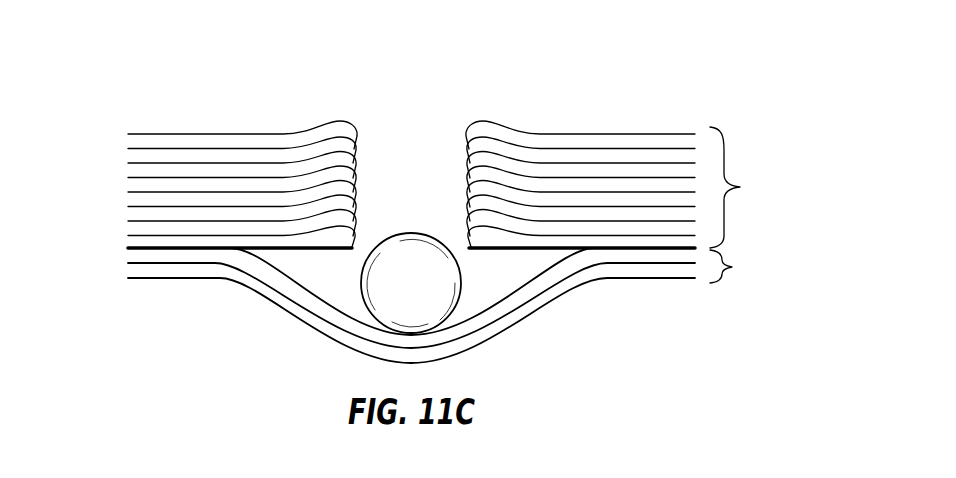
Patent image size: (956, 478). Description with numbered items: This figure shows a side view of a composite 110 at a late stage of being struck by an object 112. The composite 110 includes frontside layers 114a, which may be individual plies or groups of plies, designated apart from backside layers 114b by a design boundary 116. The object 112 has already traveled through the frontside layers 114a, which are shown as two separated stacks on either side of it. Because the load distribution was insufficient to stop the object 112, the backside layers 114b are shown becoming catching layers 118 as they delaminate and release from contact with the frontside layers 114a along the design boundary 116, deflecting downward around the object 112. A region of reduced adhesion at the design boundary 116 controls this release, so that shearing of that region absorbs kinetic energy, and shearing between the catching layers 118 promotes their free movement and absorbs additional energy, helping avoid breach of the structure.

The composite 110 is at (695, 64).
The object 112 is at (411, 231).
The frontside layers 114a is at (740, 187).
The backside layers 114b is at (732, 267).
The design boundary 116 is at (126, 248).
The catching layers 118 is at (558, 292).